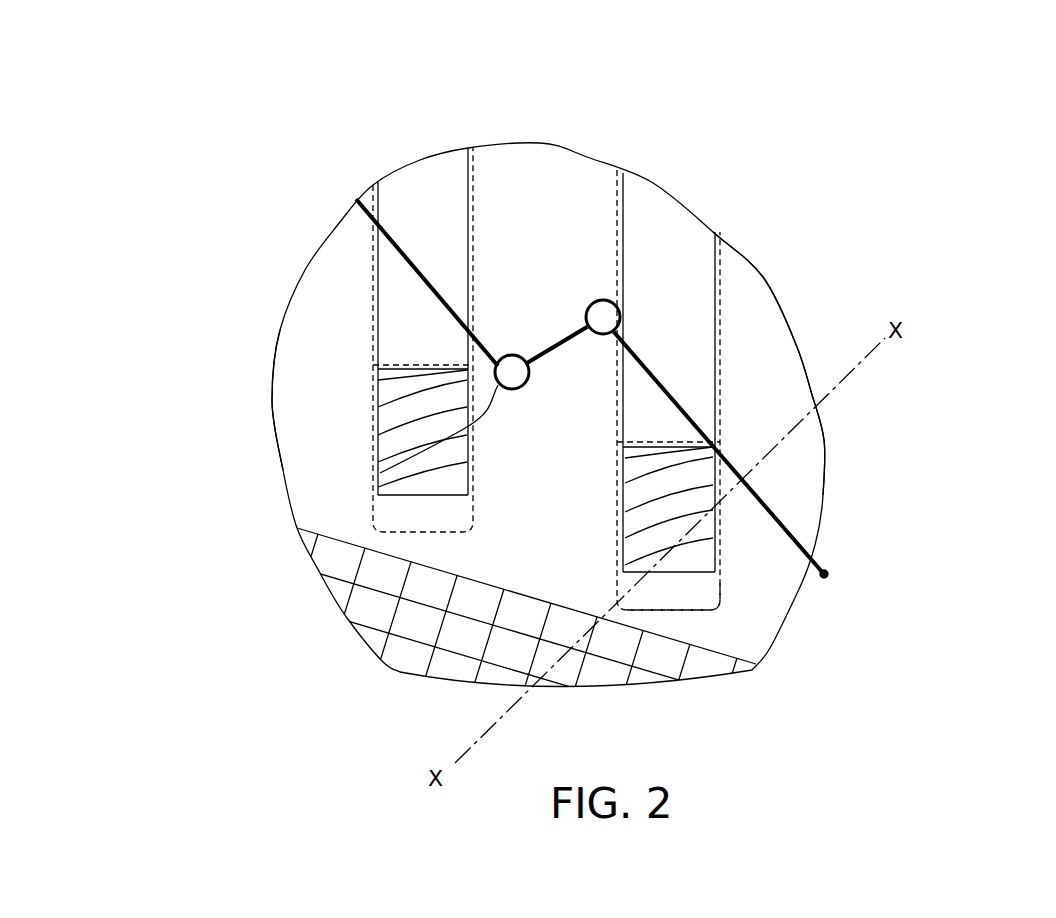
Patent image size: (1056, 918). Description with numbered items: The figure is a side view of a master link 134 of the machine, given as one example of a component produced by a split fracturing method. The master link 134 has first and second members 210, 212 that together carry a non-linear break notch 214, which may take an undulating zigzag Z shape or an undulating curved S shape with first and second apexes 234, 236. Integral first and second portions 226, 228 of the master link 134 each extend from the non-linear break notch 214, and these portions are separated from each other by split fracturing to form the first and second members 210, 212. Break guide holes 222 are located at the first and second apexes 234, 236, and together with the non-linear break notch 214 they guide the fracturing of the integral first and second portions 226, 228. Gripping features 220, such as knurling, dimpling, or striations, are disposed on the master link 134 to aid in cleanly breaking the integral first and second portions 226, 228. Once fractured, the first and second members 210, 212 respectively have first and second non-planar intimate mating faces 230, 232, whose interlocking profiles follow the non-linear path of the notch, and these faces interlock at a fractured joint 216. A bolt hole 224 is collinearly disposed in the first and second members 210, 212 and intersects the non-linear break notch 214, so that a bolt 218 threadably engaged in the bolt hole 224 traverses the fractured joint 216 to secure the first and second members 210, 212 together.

The master link 134 is at (897, 150).
The first member 210 is at (608, 688).
The second member 212 is at (822, 462).
The non-linear break notch 214 is at (388, 230).
The fractured joint 216 is at (830, 577).
The bolt 218 is at (620, 238).
The gripping features 220 is at (453, 663).
The break guide holes 222 is at (507, 357).
The bolt hole 224 is at (688, 600).
The first portion 226 is at (258, 462).
The second portion 228 is at (765, 274).
The first non-planar intimate mating face 230 is at (368, 214).
The second non-planar intimate mating face 232 is at (797, 535).
The first apex 234 is at (380, 473).
The second apex 236 is at (602, 299).